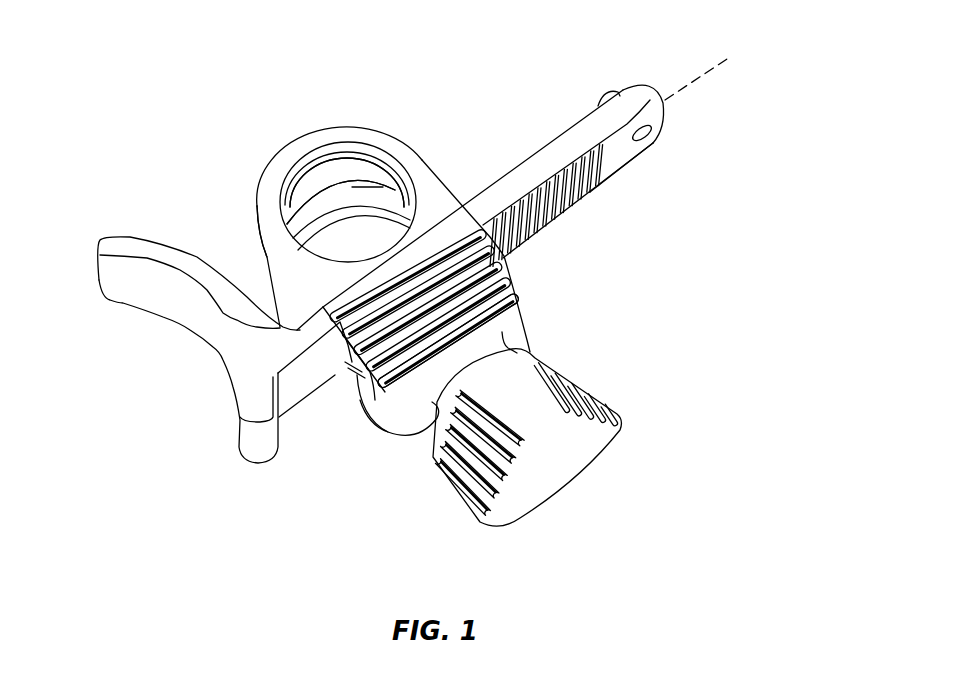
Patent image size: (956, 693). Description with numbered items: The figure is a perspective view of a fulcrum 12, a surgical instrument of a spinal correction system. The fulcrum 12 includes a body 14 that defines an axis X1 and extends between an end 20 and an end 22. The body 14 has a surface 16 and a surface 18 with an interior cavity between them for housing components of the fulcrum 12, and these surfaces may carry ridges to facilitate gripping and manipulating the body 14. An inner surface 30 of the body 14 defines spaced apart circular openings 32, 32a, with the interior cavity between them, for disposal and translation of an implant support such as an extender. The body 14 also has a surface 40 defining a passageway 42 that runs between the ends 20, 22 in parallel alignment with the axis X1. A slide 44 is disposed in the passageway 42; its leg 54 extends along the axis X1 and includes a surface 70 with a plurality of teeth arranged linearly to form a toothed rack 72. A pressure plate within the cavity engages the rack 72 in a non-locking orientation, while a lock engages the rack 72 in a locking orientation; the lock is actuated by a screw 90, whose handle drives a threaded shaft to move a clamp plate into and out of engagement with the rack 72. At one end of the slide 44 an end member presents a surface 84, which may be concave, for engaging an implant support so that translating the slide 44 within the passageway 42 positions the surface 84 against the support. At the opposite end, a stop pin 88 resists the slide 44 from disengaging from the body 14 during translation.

The fulcrum 12 is at (693, 245).
The body 14 is at (504, 256).
The surface 16 is at (512, 289).
The surface 18 is at (390, 433).
The end 20 is at (455, 193).
The end 22 is at (375, 402).
The inner surface 30 is at (390, 180).
The opening 32 is at (383, 187).
The opening 32a is at (383, 208).
The surface 40 is at (268, 258).
The passageway 42 is at (340, 378).
The slide 44 is at (650, 167).
The leg 54 is at (547, 143).
The surface 70 is at (598, 185).
The toothed rack 72 is at (577, 200).
The surface 84 is at (138, 285).
The stop pin 88 is at (606, 90).
The screw 90 is at (570, 470).
The axis X1 is at (713, 72).